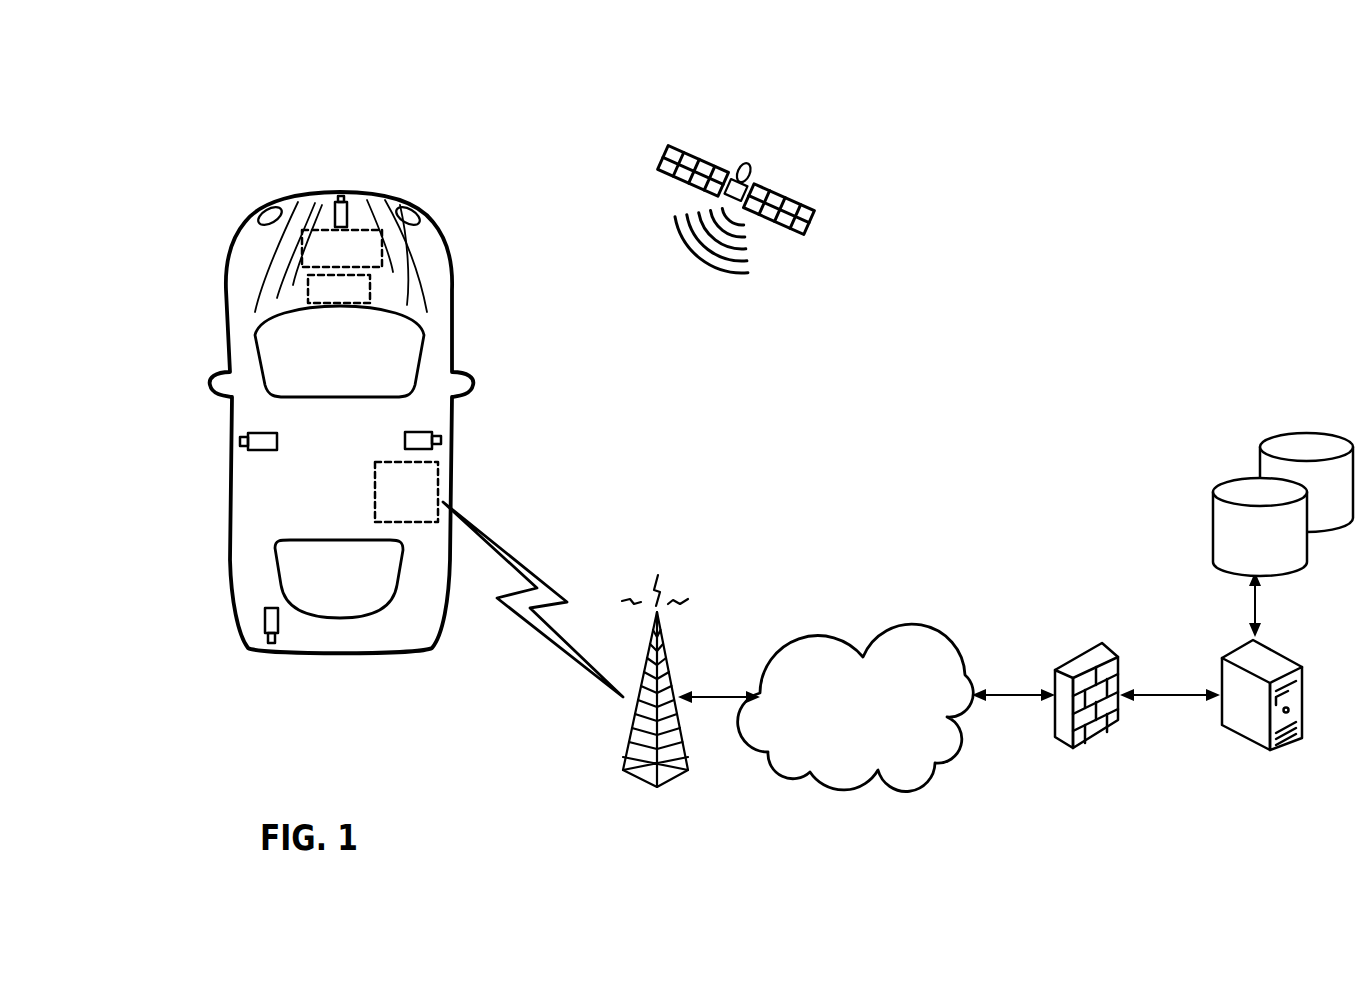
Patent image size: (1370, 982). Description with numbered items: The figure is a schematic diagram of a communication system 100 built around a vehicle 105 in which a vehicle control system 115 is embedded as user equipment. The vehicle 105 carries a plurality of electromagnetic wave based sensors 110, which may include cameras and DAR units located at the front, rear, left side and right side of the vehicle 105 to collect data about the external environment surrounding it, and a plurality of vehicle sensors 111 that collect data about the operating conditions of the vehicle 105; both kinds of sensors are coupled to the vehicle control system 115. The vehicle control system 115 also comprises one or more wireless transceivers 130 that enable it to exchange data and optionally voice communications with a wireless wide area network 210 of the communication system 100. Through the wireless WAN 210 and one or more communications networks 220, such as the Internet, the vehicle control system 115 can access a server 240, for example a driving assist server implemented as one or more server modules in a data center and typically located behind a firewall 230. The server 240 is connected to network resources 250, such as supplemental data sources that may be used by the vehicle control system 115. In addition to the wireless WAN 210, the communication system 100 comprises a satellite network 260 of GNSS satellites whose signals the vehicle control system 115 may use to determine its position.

The communication system 100 is at (295, 87).
The vehicle 105 is at (425, 277).
The electromagnetic (EM) wave based sensors 110 is at (348, 213).
The vehicle sensors 111 is at (356, 299).
The vehicle control system 115 is at (357, 259).
The wireless transceivers 130 is at (427, 504).
The wireless wide area network (WAN) 210 is at (665, 709).
The communications networks 220 is at (856, 707).
The firewall 230 is at (1086, 718).
The server 240 is at (1262, 725).
The network resources 250 is at (1178, 504).
The satellite network 260 is at (740, 224).